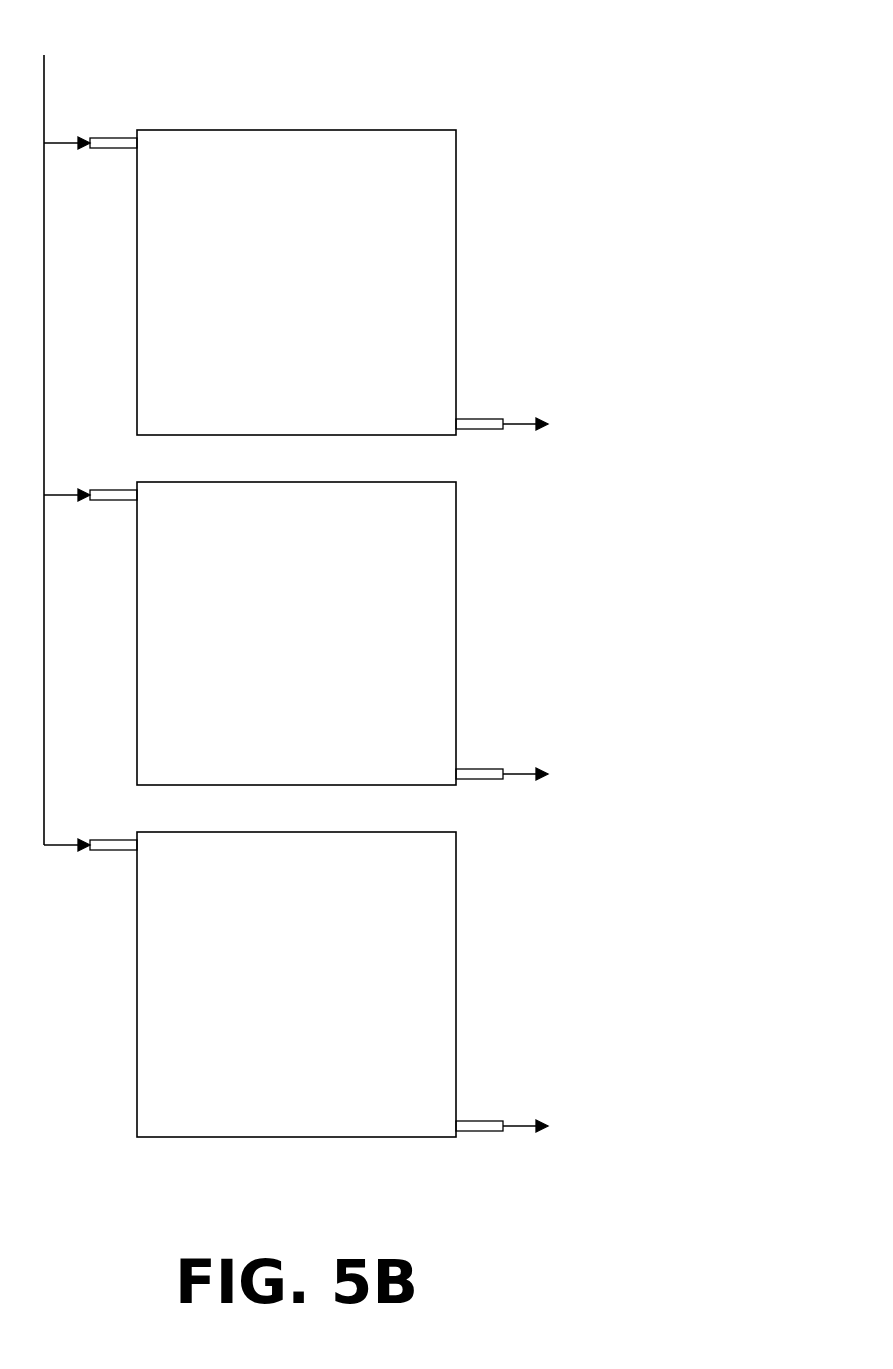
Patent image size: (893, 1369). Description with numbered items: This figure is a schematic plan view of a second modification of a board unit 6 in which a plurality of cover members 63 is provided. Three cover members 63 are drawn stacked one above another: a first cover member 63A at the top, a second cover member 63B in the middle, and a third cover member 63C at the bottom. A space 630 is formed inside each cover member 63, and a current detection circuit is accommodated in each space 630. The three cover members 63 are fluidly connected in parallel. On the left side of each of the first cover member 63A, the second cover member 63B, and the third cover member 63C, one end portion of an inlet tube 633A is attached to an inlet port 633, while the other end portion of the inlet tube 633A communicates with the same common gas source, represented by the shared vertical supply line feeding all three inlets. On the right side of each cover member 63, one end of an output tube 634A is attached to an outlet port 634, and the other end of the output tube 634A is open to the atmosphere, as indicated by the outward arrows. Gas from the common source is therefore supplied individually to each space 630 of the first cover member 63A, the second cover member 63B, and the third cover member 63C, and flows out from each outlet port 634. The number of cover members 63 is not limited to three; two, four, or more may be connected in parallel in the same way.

The board unit 6 is at (300, 98).
The cover member 63 is at (351, 633).
The first cover member 63A is at (445, 242).
The second cover member 63B is at (445, 594).
The third cover member 63C is at (445, 956).
The space 630 is at (328, 293).
The inlet port 633 is at (130, 148).
The inlet tube 633A is at (107, 138).
The outlet port 634 is at (462, 418).
The output tube 634A is at (488, 430).